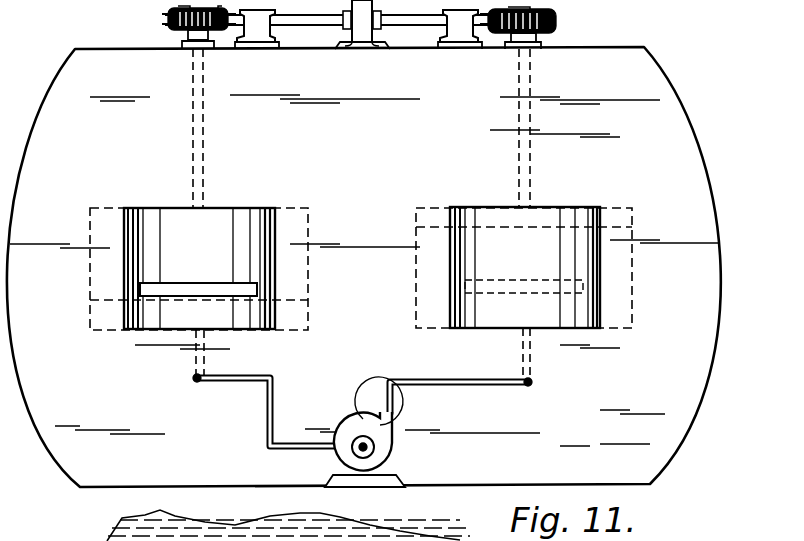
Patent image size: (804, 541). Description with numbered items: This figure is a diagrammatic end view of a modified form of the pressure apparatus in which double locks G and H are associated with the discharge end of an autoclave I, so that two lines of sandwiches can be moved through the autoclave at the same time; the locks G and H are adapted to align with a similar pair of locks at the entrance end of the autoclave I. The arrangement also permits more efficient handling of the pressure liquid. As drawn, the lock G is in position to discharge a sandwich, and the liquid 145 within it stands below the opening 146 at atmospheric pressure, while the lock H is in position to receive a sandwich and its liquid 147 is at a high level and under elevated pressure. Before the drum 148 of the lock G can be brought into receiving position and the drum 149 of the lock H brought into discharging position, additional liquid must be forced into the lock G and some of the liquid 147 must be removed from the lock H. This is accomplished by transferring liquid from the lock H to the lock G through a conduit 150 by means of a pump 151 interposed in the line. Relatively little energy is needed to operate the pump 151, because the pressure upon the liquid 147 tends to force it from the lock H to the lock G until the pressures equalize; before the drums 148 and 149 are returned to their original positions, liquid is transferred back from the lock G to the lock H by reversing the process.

The autoclave I is at (47, 90).
The lock G is at (125, 206).
The lock H is at (447, 205).
The liquid 145 is at (286, 300).
The opening 146 is at (211, 283).
The liquid 147 is at (611, 220).
The drum 148 is at (239, 218).
The drum 149 is at (545, 220).
The conduit 150 is at (276, 410).
The pump 151 is at (358, 426).